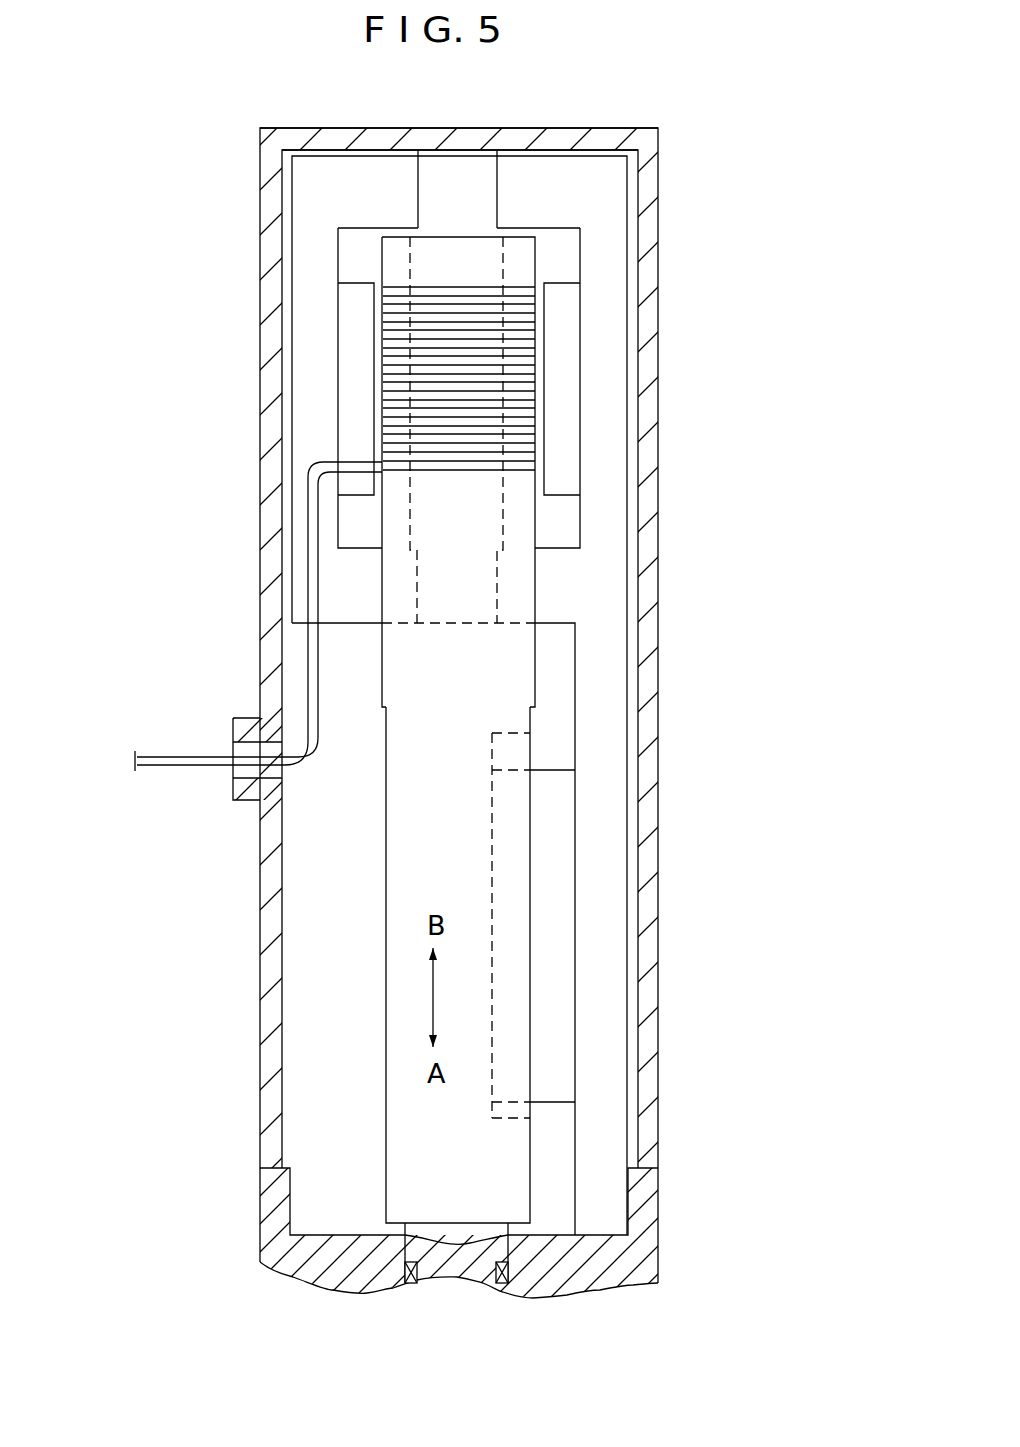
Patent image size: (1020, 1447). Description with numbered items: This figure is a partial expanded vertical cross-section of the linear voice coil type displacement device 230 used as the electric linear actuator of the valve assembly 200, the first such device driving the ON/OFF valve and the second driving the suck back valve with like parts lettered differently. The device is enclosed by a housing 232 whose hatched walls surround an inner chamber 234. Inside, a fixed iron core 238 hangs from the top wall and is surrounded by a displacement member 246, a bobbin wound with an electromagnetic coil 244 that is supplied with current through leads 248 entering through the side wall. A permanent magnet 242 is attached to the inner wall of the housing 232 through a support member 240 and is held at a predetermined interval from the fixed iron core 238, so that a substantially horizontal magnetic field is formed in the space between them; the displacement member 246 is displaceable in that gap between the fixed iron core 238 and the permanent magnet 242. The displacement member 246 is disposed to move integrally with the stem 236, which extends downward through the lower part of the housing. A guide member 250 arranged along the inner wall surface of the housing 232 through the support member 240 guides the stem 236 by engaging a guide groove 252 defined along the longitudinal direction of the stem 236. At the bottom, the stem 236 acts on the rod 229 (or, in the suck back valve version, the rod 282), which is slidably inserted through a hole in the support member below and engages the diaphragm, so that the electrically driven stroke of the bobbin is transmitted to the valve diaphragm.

The valve device 200 is at (668, 62).
The rod 229 is at (459, 1214).
The rod 282 is at (447, 1250).
The linear voice coil type displacement device 230 is at (666, 156).
The housing 232 is at (355, 136).
The chamber 234 is at (286, 261).
The stem 236 is at (425, 882).
The fixed iron core 238 is at (481, 165).
The support member 240 is at (597, 265).
The permanent magnet 242 is at (570, 340).
The electromagnetic coil 244 is at (475, 420).
The displacement member (bobbin) 246 is at (472, 520).
The leads 248 is at (167, 758).
The guide member 250 is at (548, 888).
The guide groove 252 is at (492, 947).